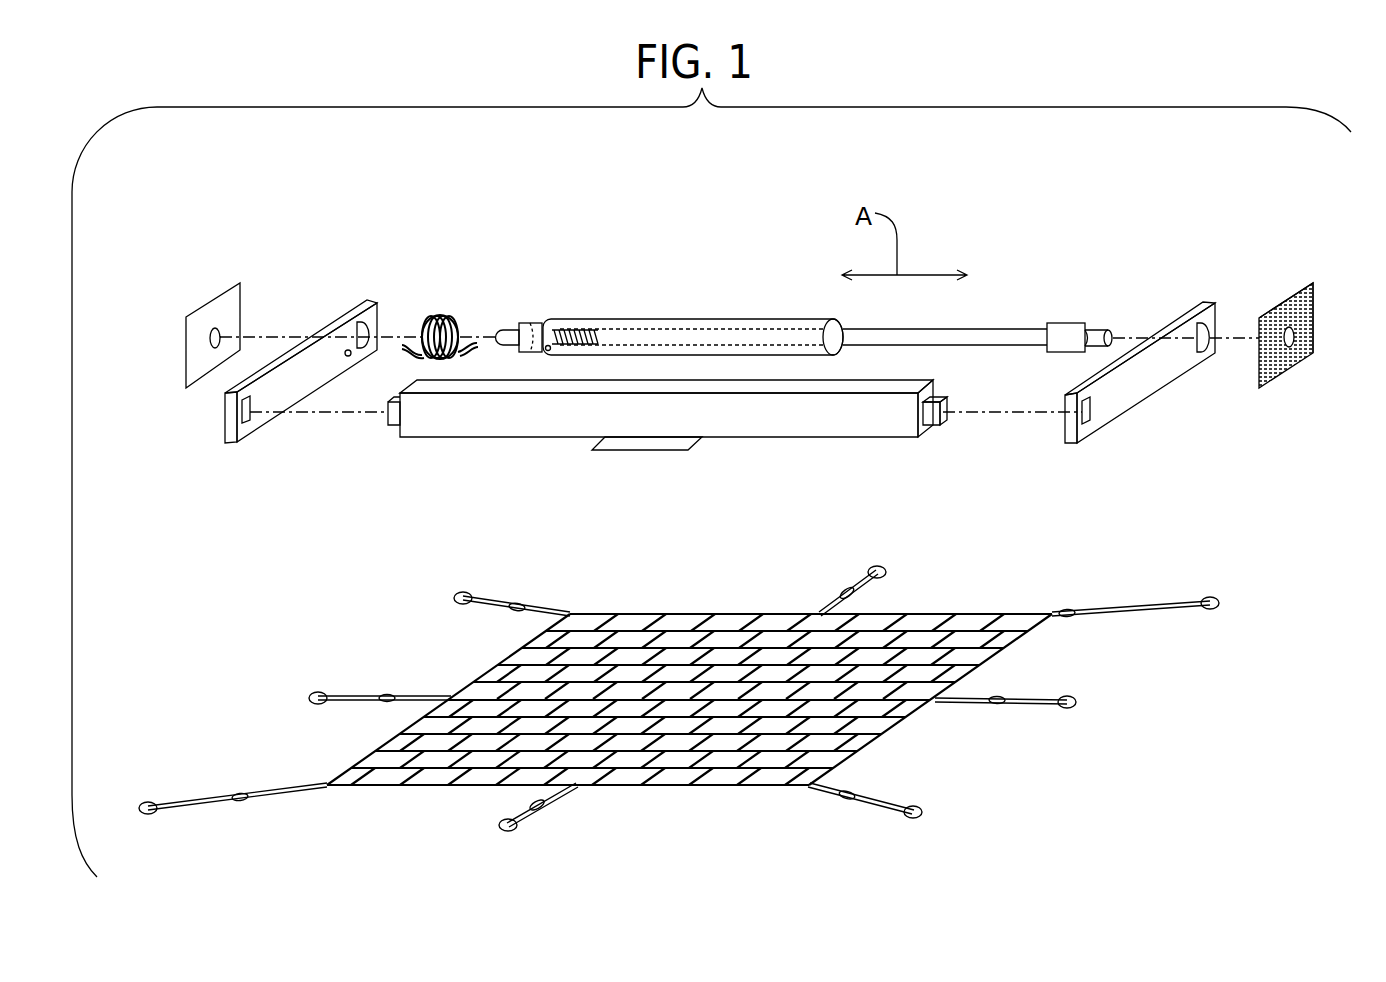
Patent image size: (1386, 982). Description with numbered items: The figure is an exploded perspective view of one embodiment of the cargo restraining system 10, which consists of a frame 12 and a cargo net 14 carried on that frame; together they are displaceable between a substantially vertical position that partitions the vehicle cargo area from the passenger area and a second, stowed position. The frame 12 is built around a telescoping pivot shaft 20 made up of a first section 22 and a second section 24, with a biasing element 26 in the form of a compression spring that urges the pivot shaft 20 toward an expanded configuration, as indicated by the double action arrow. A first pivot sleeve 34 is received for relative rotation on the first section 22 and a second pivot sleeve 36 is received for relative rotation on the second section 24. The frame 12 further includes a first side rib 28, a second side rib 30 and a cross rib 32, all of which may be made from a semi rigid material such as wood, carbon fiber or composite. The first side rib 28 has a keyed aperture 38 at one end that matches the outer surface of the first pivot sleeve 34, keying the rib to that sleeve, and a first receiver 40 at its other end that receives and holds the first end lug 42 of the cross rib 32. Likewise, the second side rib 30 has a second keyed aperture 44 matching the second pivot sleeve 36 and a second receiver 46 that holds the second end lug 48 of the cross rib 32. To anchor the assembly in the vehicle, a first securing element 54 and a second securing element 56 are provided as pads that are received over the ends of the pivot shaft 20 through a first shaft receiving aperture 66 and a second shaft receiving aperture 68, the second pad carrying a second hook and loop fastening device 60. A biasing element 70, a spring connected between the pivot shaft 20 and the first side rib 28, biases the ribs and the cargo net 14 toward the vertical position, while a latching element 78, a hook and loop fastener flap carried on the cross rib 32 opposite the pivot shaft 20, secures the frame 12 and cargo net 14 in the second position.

The cargo restraining system 10 is at (990, 195).
The frame 12 is at (216, 499).
The cargo net 14 is at (371, 649).
The pivot shaft 20 is at (760, 318).
The first section 22 is at (508, 330).
The second section 24 is at (987, 326).
The biasing element 26 is at (591, 320).
The first side rib 28 is at (333, 352).
The second side rib 30 is at (1155, 375).
The cross rib 32 is at (495, 422).
The first pivot sleeve 34 is at (526, 322).
The second pivot sleeve 36 is at (1070, 323).
The keyed aperture 38 is at (372, 322).
The first receiver 40 is at (245, 418).
The first end lug 42 is at (385, 425).
The second keyed aperture 44 is at (1208, 320).
The second receiver 46 is at (1090, 413).
The second end lug 48 is at (940, 415).
The first securing element 54 is at (213, 298).
The second securing element 56 is at (1285, 373).
The second hook and loop fastening device 60 is at (1312, 303).
The first shaft receiving aperture 66 is at (210, 338).
The second shaft receiving aperture 68 is at (1295, 345).
The biasing element 70 is at (440, 313).
The latching element 78 is at (660, 452).